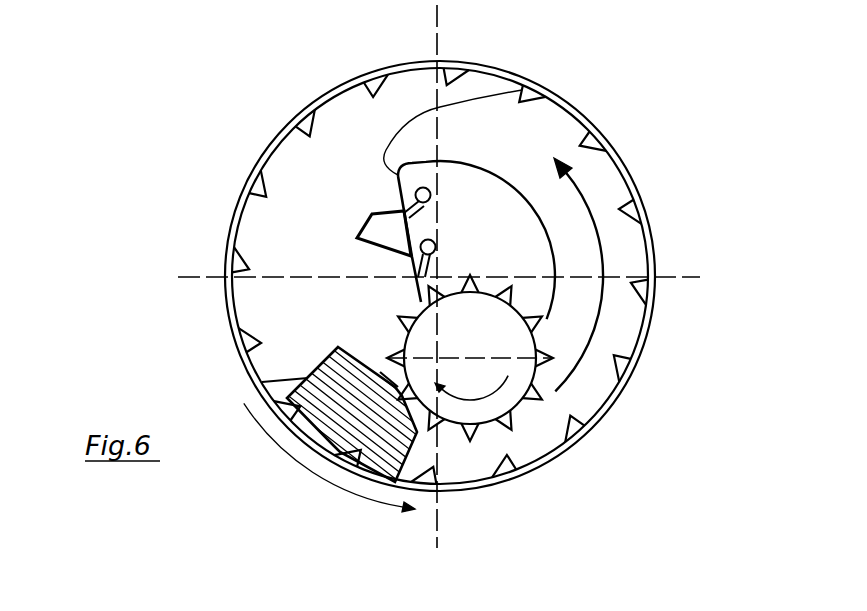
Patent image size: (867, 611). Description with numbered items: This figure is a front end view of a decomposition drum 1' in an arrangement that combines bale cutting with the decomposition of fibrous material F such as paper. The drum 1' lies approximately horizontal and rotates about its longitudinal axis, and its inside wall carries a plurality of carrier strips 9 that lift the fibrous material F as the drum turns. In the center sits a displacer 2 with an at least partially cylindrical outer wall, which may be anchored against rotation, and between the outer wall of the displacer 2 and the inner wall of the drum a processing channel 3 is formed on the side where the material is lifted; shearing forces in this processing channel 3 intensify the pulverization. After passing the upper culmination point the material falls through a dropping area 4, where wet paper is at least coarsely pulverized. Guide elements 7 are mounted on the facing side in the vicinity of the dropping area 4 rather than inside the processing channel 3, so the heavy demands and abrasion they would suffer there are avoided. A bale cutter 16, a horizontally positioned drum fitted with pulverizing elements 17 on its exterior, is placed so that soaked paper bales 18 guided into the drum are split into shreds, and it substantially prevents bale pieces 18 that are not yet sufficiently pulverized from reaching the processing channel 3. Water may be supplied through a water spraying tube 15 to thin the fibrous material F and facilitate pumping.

The drum 1' is at (440, 257).
The displacer 2 is at (518, 250).
The processing channel 3 is at (603, 195).
The dropping area 4 is at (296, 219).
The guide elements 7 is at (390, 237).
The carrier strips 9 is at (614, 366).
The water spraying tube 15 is at (414, 189).
The bale cutter 16 is at (527, 390).
The pulverizing elements 17 is at (518, 427).
The paper bales 18 is at (360, 413).
The fibrous material F is at (423, 135).